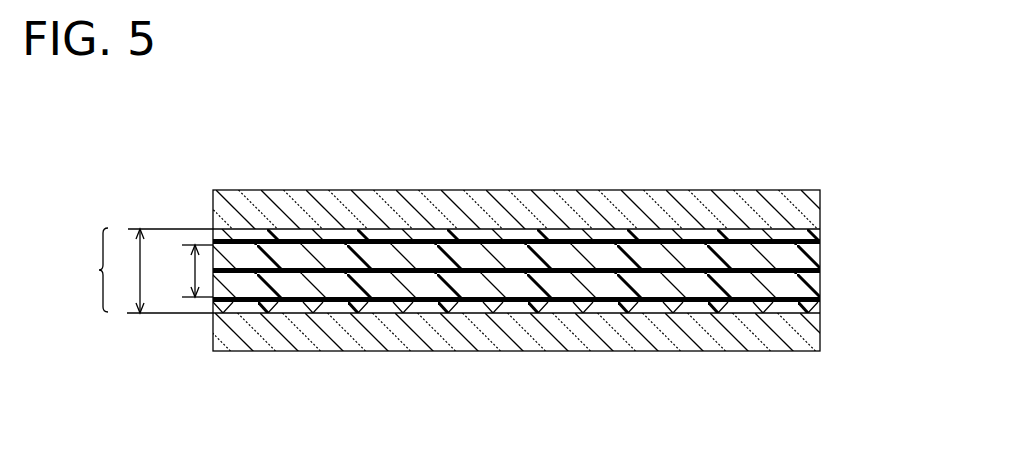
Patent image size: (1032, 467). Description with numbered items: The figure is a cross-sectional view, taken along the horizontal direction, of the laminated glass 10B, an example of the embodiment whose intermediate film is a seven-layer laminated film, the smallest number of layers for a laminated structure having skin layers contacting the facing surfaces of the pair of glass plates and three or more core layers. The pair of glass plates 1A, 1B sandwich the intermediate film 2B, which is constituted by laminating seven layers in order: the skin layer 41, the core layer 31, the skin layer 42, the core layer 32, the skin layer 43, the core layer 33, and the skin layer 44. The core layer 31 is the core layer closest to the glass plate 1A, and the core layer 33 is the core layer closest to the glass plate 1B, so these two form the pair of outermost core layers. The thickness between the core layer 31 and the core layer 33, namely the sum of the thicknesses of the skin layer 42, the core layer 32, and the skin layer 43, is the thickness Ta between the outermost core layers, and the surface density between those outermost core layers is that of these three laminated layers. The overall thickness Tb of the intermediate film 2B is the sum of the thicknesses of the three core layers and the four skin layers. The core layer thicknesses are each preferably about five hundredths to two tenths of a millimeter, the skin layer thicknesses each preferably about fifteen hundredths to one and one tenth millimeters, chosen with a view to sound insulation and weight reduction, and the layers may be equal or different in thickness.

The laminated glass 10B is at (518, 173).
The glass plate 1B is at (777, 193).
The glass plate 1A is at (765, 344).
The intermediate film 2B is at (85, 270).
The skin layer 44 is at (822, 230).
The skin layer 43 is at (822, 254).
The skin layer 42 is at (822, 286).
The skin layer 41 is at (822, 314).
The core layer 33 is at (822, 241).
The core layer 32 is at (822, 270).
The core layer 31 is at (822, 302).
The thickness of the intermediate film Tb is at (161, 271).
The thickness between outermost core layers Ta is at (188, 271).